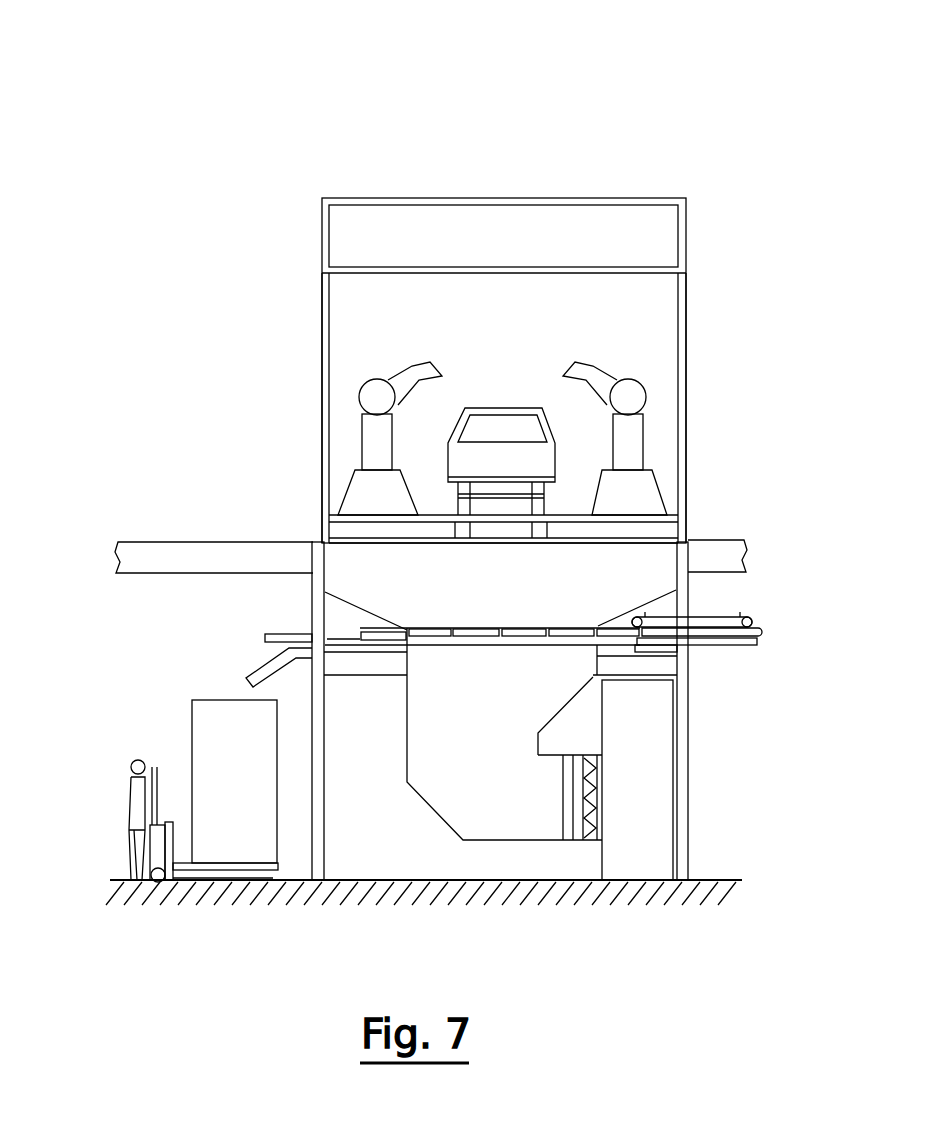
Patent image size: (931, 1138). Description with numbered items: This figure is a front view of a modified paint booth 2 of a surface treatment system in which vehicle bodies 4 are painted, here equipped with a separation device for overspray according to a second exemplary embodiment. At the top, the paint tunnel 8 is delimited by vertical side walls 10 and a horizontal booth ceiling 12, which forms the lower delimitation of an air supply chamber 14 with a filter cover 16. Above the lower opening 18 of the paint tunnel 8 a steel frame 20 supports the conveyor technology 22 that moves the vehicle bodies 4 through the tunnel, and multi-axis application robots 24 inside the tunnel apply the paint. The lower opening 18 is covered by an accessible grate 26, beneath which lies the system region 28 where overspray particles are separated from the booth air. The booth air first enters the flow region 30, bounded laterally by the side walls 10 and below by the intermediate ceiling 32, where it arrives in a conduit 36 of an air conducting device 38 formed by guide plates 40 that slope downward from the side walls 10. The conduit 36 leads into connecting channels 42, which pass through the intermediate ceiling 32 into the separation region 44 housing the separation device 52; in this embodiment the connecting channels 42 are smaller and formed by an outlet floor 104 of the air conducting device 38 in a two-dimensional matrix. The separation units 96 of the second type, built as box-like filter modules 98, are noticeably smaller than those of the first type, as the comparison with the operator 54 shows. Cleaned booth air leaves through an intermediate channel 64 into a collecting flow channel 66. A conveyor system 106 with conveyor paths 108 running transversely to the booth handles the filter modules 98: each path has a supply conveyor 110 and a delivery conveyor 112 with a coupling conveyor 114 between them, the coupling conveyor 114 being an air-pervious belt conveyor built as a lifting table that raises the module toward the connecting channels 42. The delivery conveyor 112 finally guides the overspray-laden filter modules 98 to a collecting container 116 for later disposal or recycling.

The paint booth 2 is at (355, 106).
The vehicle body 4 is at (512, 406).
The paint tunnel 8 is at (472, 313).
The side wall 10 is at (322, 332).
The booth ceiling 12 is at (372, 261).
The air supply chamber 14 is at (483, 247).
The filter cover 16 is at (553, 268).
The lower opening 18 is at (325, 538).
The steel frame 20 is at (632, 517).
The conveyor technology 22 is at (555, 492).
The application robot 24 is at (632, 432).
The grate 26 is at (613, 545).
The system region 28 is at (303, 621).
The flow region 30 is at (354, 582).
The intermediate ceiling 32 is at (625, 663).
The conduit 36 is at (538, 585).
The air conducting device 38 is at (697, 590).
The guide plate 40 is at (362, 608).
The connecting channel 42 is at (422, 627).
The separation region 44 is at (660, 663).
The separation device 52 is at (398, 690).
The operator 54 is at (128, 797).
The intermediate channel 64 is at (522, 822).
The collecting flow channel 66 is at (650, 854).
The separation unit 96 is at (422, 650).
The box-like filter module 98 is at (443, 642).
The outlet floor 104 is at (483, 622).
The conveyor system 106 is at (242, 653).
The conveyor path 108 is at (253, 630).
The supply conveyor 110 is at (732, 650).
The delivery conveyor 112 is at (300, 660).
The coupling conveyor 114 is at (488, 655).
The collecting container 116 is at (245, 838).